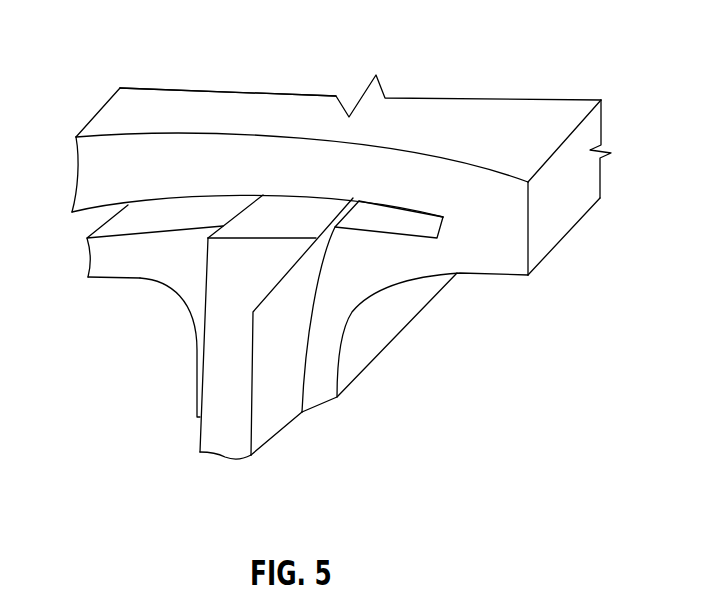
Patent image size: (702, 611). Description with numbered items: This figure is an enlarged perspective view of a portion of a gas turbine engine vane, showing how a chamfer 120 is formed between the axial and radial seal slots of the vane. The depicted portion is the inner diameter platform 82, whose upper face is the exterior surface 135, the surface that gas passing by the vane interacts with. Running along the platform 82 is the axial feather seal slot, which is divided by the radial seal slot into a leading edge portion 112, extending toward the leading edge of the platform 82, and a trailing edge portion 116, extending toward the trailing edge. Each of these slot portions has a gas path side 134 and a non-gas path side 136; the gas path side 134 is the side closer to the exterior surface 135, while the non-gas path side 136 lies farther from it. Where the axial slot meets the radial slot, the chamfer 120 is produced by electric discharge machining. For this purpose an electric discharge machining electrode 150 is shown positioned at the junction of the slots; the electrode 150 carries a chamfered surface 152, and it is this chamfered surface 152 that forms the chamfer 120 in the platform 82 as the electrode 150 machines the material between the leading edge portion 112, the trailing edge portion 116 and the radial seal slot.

The inner diameter platform 82 is at (294, 143).
The exterior surface 135 is at (190, 134).
The gas path side 134 is at (100, 204).
The non-gas path side 136 is at (88, 265).
The trailing edge portion 116 is at (405, 227).
The leading edge portion 112 is at (157, 215).
The electric discharge machining electrode 150 is at (240, 433).
The chamfered surface 152 is at (255, 311).
The chamfer 120 is at (327, 242).